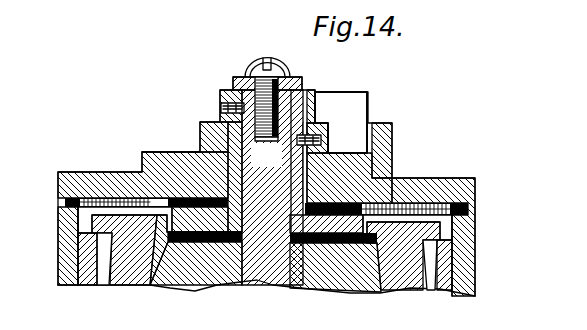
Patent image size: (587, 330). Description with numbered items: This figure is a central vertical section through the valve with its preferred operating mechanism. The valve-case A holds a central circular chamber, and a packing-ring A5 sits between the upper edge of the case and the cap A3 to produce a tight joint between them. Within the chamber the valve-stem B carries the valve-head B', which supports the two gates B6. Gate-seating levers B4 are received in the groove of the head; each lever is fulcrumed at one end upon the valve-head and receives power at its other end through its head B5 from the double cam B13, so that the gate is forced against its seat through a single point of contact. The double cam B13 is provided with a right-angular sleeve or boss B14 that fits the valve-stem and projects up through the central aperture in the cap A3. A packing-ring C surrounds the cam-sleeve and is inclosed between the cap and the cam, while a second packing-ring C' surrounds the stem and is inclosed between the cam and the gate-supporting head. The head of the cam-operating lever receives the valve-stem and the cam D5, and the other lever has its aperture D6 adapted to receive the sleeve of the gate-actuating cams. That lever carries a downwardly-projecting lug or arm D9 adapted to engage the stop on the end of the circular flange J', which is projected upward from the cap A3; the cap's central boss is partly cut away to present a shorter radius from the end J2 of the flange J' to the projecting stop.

The valve-case A is at (58, 257).
The cap A3 is at (100, 172).
The packing-ring A5 is at (67, 172).
The valve-stem B is at (270, 171).
The valve-head B' is at (265, 263).
The gate-seating lever B4 is at (127, 275).
The lever head B5 is at (495, 227).
The gate B6 is at (443, 285).
The double cam B13 is at (290, 228).
The sleeve or boss B14 is at (236, 192).
The packing-ring C is at (385, 168).
The second packing-ring C' is at (272, 279).
The cam D5 is at (200, 131).
The lever aperture D6 is at (218, 93).
The downwardly-projecting lug or arm D9 is at (332, 121).
The circular flange J' is at (398, 134).
The end of flange J2 is at (163, 152).